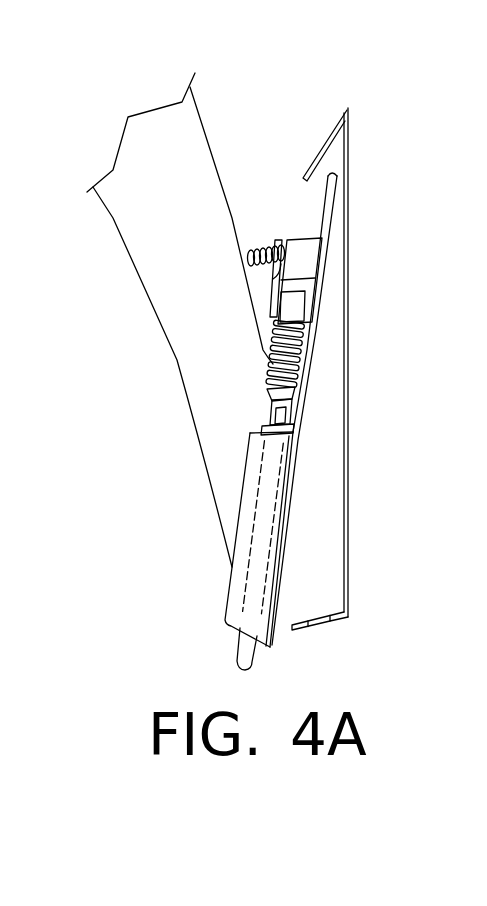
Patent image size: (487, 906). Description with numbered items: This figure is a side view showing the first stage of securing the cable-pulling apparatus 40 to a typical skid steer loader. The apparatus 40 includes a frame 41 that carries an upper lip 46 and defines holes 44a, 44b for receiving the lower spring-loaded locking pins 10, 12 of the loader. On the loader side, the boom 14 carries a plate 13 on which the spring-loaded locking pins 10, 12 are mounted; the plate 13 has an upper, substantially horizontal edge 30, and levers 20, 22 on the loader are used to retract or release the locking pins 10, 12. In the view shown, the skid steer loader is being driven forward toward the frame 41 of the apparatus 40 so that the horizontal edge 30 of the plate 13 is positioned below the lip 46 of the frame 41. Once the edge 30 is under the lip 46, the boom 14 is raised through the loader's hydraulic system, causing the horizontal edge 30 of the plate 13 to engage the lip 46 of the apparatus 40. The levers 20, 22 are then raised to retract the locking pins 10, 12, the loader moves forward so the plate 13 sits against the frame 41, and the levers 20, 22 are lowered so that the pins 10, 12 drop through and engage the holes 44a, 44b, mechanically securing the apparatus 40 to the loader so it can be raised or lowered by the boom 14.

The lower spring-loaded locking pin 10 is at (243, 650).
The lower spring-loaded locking pin 12 is at (247, 649).
The plate 13 is at (288, 497).
The boom 14 is at (180, 313).
The lever 20 is at (271, 240).
The lever 22 is at (266, 278).
The horizontal edge 30 is at (332, 172).
The apparatus 40 is at (350, 212).
The frame 41 is at (347, 353).
The hole 44a is at (330, 623).
The hole 44b is at (339, 616).
The upper lip 46 is at (328, 158).